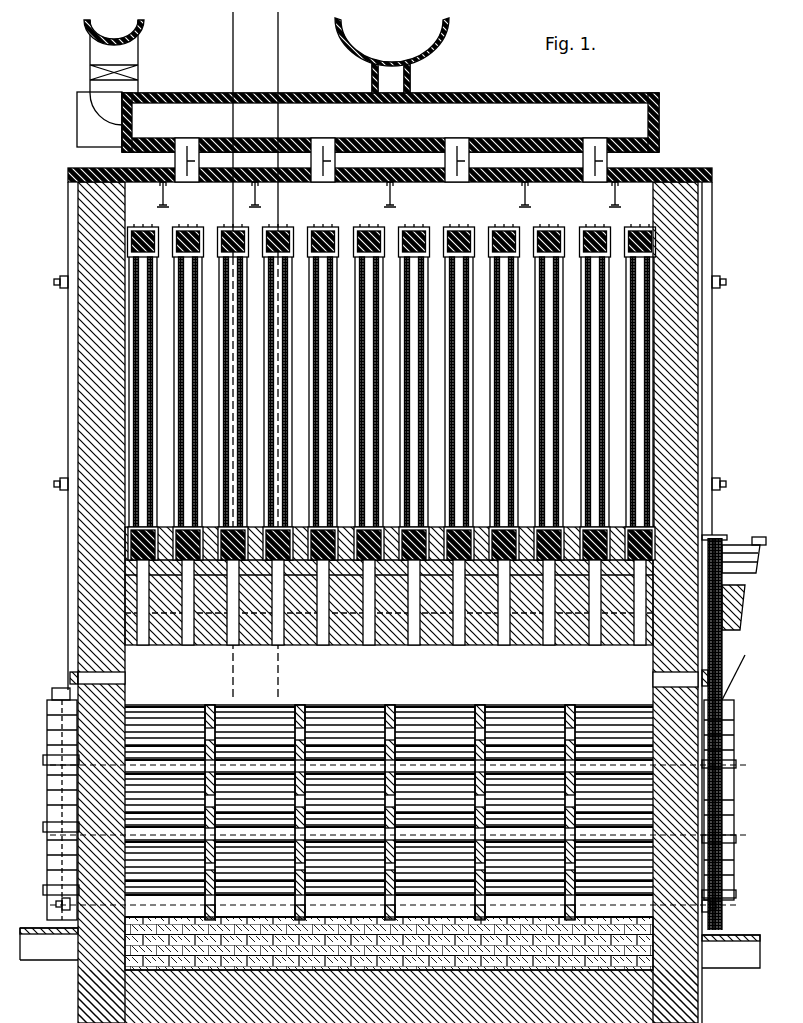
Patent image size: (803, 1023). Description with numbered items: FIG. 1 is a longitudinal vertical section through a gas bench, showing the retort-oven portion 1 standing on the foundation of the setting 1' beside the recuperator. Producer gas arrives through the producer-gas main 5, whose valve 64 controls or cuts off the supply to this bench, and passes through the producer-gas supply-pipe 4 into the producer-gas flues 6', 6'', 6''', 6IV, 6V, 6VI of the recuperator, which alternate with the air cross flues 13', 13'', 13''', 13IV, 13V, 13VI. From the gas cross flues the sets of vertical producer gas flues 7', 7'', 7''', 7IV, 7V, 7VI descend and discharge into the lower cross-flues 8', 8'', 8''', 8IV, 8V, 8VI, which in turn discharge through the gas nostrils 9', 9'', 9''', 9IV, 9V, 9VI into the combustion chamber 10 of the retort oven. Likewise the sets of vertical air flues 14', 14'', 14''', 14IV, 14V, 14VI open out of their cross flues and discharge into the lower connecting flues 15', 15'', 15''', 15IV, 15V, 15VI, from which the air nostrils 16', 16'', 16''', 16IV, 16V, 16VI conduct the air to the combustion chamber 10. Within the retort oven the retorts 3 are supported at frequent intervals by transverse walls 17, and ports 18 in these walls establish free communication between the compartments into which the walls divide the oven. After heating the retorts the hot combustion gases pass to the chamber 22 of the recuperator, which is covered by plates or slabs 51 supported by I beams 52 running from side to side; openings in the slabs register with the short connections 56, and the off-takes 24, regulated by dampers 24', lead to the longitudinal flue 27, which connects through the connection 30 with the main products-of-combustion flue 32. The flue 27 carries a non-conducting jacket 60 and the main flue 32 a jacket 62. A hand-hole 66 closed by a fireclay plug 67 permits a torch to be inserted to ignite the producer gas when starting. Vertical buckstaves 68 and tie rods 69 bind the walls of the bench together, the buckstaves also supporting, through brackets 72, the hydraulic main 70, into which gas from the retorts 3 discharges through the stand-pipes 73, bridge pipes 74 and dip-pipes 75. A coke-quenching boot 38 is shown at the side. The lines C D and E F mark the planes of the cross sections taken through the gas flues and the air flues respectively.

The retort-oven portion 1 is at (389, 811).
The foundation of the setting 1' is at (371, 602).
The retorts 3 is at (45, 840).
The producer-gas supply-pipe 4 is at (99, 119).
The producer-gas main 5 is at (114, 69).
The producer-gas flue 6' is at (143, 230).
The producer-gas flue 6'' is at (233, 230).
The producer-gas flue 6''' is at (323, 230).
The producer-gas flue 6IV is at (414, 227).
The producer-gas flue 6V is at (504, 227).
The producer-gas flue 6VI is at (595, 227).
The air cross flue 13' is at (188, 230).
The air cross flue 13'' is at (280, 230).
The air cross flue 13''' is at (373, 230).
The air cross flue 13IV is at (461, 227).
The air cross flue 13V is at (551, 227).
The air cross flue 13VI is at (642, 227).
The vertical producer gas flues 7' is at (150, 392).
The vertical producer gas flues 7'' is at (242, 392).
The vertical producer gas flues 7''' is at (334, 392).
The vertical producer gas flues 7IV is at (421, 287).
The vertical producer gas flues 7V is at (511, 287).
The vertical producer gas flues 7VI is at (602, 287).
The vertical air flues 14' is at (178, 392).
The vertical air flues 14'' is at (268, 392).
The vertical air flues 14''' is at (358, 392).
The vertical air flues 14IV is at (453, 321).
The vertical air flues 14V is at (543, 321).
The vertical air flues 14VI is at (634, 321).
The lower cross-flue 8' is at (148, 530).
The lower cross-flue 8'' is at (240, 530).
The lower cross-flue 8''' is at (332, 530).
The lower cross-flue 8IV is at (424, 530).
The lower cross-flue 8V is at (514, 530).
The lower cross-flue 8VI is at (605, 530).
The lower connecting flue 15' is at (199, 530).
The lower connecting flue 15'' is at (291, 530).
The lower connecting flue 15''' is at (385, 530).
The lower connecting flue 15IV is at (467, 530).
The lower connecting flue 15V is at (557, 530).
The lower connecting flue 15VI is at (636, 532).
The gas nostril 9' is at (143, 618).
The gas nostril 9'' is at (239, 618).
The gas nostril 9''' is at (330, 618).
The gas nostril 9IV is at (416, 640).
The gas nostril 9V is at (506, 640).
The gas nostril 9VI is at (596, 640).
The air nostril 16' is at (191, 618).
The air nostril 16'' is at (292, 618).
The air nostril 16''' is at (382, 618).
The air nostril 16IV is at (461, 640).
The air nostril 16V is at (551, 640).
The air nostril 16VI is at (640, 640).
The combustion chamber 10 is at (389, 611).
The transverse walls 17 is at (382, 707).
The ports 18 is at (208, 750).
The recuperator chamber 22 is at (140, 393).
The off-takes 24 is at (450, 185).
The dampers 24' is at (390, 165).
The longitudinal flue 27 is at (390, 127).
The connection 30 is at (391, 77).
The main products-of-combustion flue 32 is at (392, 42).
The coke-quenching boot 38 is at (760, 962).
The plates or slabs 51 is at (432, 183).
The I beams 52 is at (164, 192).
The short connections 56 is at (190, 144).
The non-conducting jacket 60 is at (500, 97).
The jacket 62 is at (447, 40).
The valves 64 is at (138, 72).
The hand-hole 66 is at (115, 677).
The fireclay plug 67 is at (70, 670).
The vertical buckstaves 68 is at (68, 383).
The tie rods 69 is at (58, 280).
The hydraulic main 70 is at (742, 612).
The brackets 72 is at (762, 660).
The stand-pipes 73 is at (716, 648).
The bridge pipes 74 is at (735, 555).
The dip-pipes 75 is at (762, 537).
The section line C D C is at (221, 354).
The section line E F E is at (287, 354).
The section line E F is at (270, 681).
The section line C D is at (740, 939).